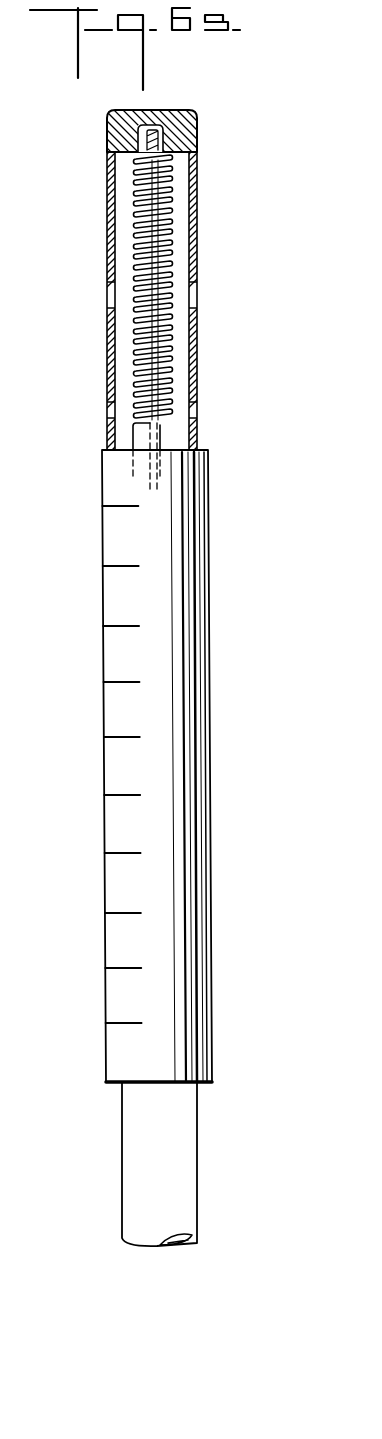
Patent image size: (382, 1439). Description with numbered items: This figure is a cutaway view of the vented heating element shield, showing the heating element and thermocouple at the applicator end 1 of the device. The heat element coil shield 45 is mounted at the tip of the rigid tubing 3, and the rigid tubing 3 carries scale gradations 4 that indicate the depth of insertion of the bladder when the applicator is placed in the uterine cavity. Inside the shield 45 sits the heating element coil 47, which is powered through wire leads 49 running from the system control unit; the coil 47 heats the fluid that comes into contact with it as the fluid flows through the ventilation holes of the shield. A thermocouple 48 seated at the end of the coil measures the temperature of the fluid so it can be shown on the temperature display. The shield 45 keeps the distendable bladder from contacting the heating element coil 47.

The applicator end 1 is at (197, 1155).
The rigid tubing 3 is at (186, 745).
The scale gradations 4 is at (110, 795).
The heat element coil shield 45 is at (107, 223).
The heating element coil 47 is at (136, 330).
The thermocouple 48 is at (165, 128).
The wire leads 49 is at (135, 483).